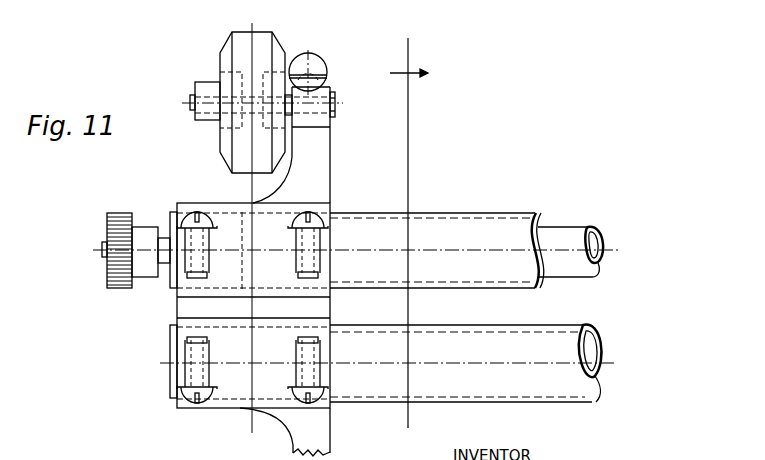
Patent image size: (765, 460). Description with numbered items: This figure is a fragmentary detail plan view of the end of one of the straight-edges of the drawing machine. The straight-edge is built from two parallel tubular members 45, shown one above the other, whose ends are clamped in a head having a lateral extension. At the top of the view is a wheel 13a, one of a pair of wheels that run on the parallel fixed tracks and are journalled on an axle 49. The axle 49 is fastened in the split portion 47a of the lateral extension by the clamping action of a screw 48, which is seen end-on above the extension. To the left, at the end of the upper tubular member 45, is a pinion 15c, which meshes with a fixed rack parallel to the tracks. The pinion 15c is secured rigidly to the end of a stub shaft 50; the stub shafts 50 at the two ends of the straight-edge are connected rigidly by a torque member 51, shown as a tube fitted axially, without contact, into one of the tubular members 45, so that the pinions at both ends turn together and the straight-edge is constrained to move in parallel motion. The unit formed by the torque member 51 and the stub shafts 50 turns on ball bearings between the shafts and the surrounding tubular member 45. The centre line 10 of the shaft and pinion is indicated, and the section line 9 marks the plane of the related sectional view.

The wheel 13a is at (228, 45).
The axle 49 is at (193, 97).
The screw 48 is at (326, 56).
The split portion 47a is at (332, 91).
The pinion 15c is at (120, 290).
The stub shaft 50 is at (167, 233).
The axis line 10 is at (357, 299).
The tubular member 45 is at (443, 213).
The torque member 51 is at (560, 226).
The section line 9- 9 is at (409, 233).